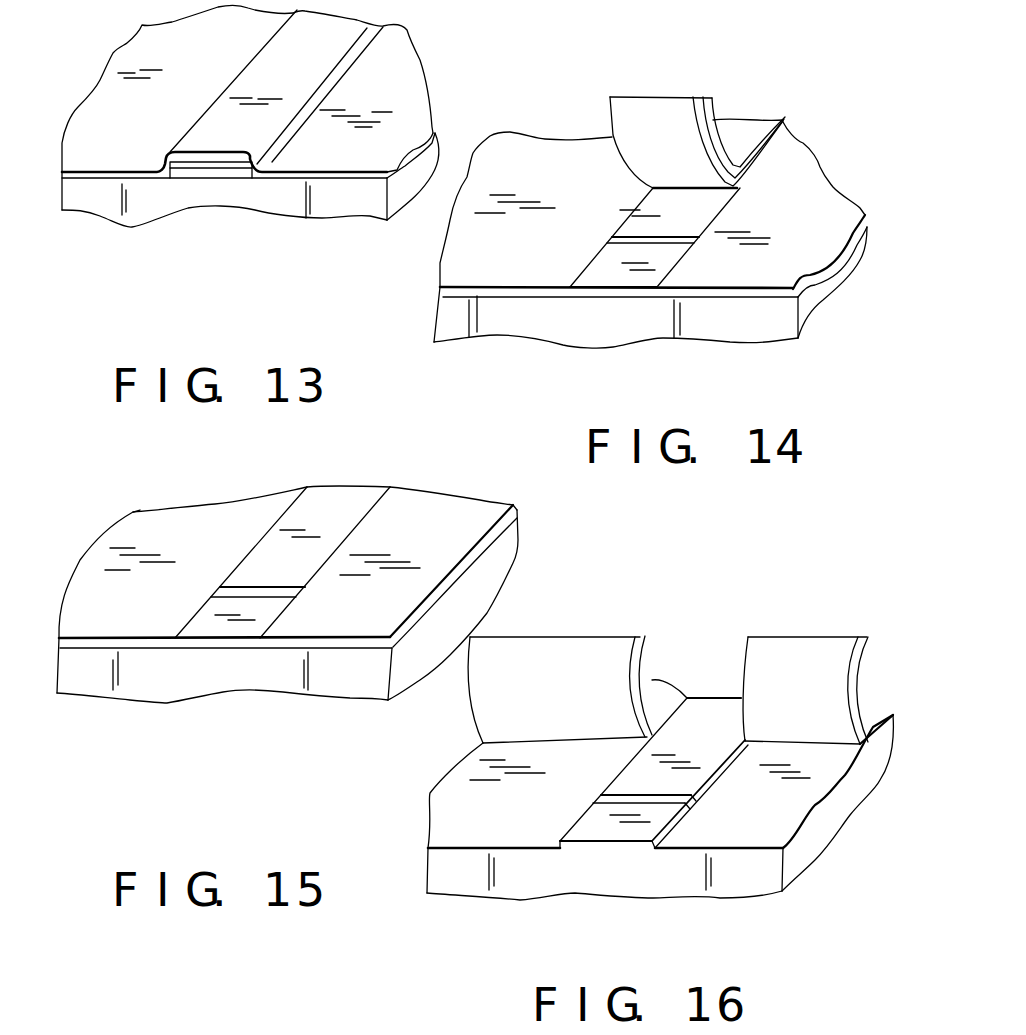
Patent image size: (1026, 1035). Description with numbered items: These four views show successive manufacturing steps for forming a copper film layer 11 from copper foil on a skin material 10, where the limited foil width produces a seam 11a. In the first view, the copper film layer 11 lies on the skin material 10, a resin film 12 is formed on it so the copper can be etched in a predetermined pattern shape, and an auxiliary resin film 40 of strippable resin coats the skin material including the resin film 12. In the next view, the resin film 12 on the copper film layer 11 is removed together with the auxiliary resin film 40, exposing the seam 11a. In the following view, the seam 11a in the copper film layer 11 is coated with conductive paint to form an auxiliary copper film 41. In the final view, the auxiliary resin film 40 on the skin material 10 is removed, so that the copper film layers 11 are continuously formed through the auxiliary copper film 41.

In FIG. 13, the skin material 10 is at (95, 200).
In FIG. 14, the skin material 10 is at (707, 313).
In FIG. 15, the skin material 10 is at (88, 680).
In FIG. 16, the skin material 10 is at (737, 870).
In FIG. 13, the copper film layer 11 is at (200, 178).
In FIG. 14, the copper film layer 11 is at (625, 277).
In FIG. 15, the copper film layer 11 is at (228, 620).
In FIG. 16, the copper film layer 11 is at (600, 827).
In FIG. 14, the seam 11a is at (627, 243).
In FIG. 13, the resin film 12 is at (228, 168).
In FIG. 14, the resin film 12 is at (622, 117).
In FIG. 13, the auxiliary resin film 40 is at (345, 160).
In FIG. 14, the auxiliary resin film 40 is at (753, 136).
In FIG. 15, the auxiliary resin film 40 is at (137, 645).
In FIG. 16, the auxiliary resin film 40 is at (668, 687).
In FIG. 15, the auxiliary copper film 41 is at (220, 587).
In FIG. 16, the auxiliary copper film 41 is at (667, 800).